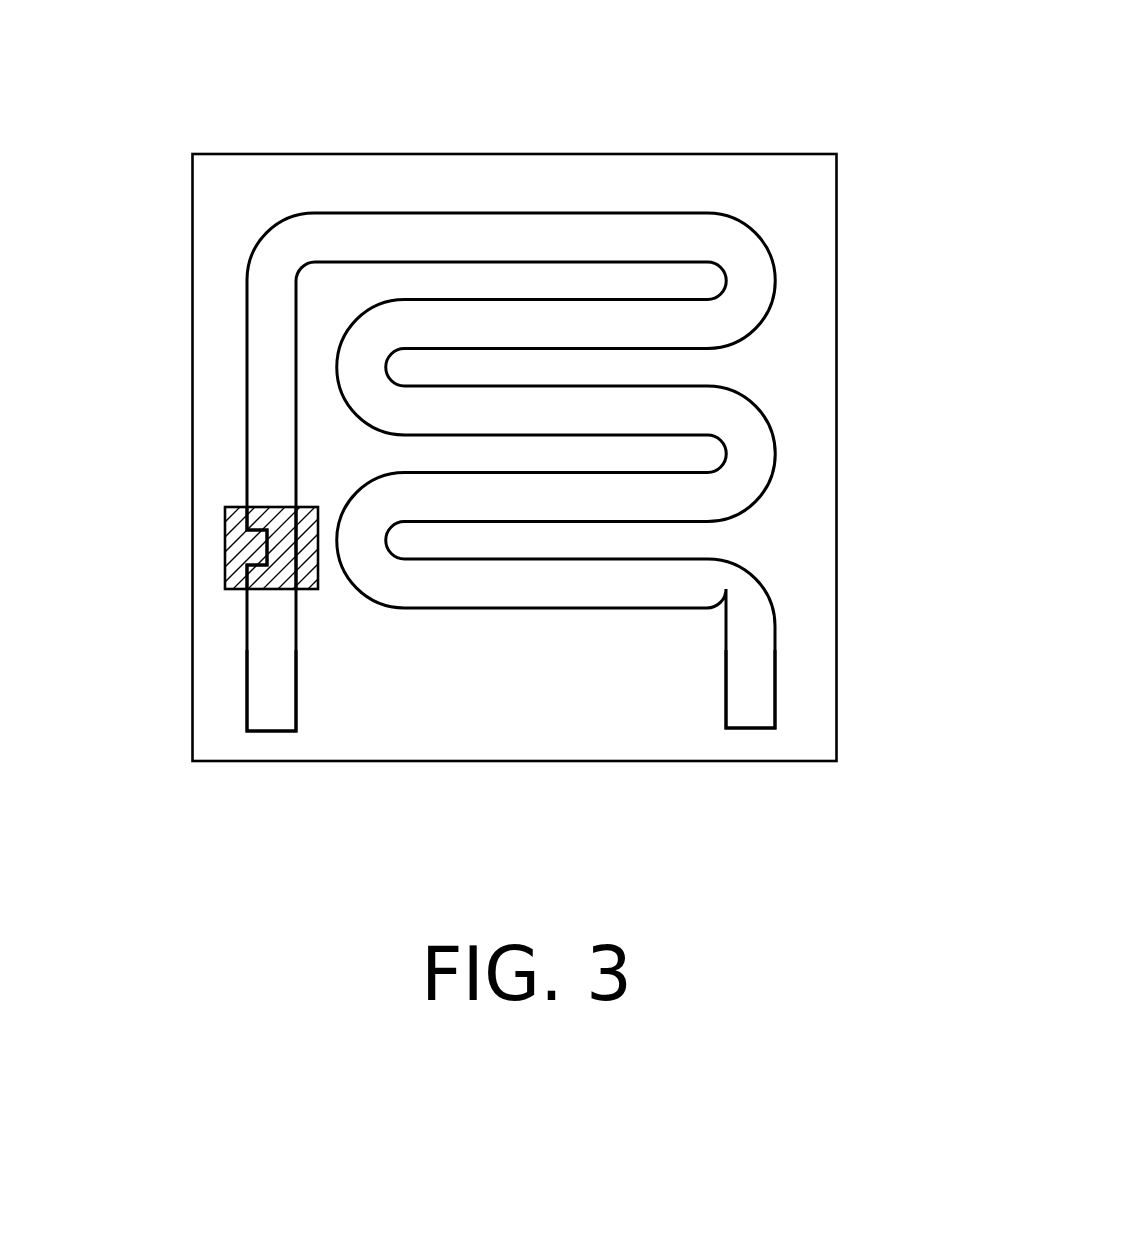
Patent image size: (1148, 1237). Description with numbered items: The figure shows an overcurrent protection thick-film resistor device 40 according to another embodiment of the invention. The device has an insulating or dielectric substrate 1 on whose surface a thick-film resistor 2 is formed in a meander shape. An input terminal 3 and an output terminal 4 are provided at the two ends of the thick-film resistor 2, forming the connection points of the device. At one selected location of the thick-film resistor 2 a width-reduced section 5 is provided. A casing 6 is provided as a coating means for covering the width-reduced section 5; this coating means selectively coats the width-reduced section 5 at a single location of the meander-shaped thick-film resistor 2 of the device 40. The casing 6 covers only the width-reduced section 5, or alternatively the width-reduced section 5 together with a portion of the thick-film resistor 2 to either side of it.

The overcurrent protection thick-film resistor device 40 is at (526, 136).
The substrate 1 is at (803, 408).
The thick-film resistor 2 is at (681, 232).
The input terminal 3 is at (272, 713).
The output terminal 4 is at (753, 703).
The width-reduced section 5 is at (253, 548).
The casing 6 is at (225, 533).